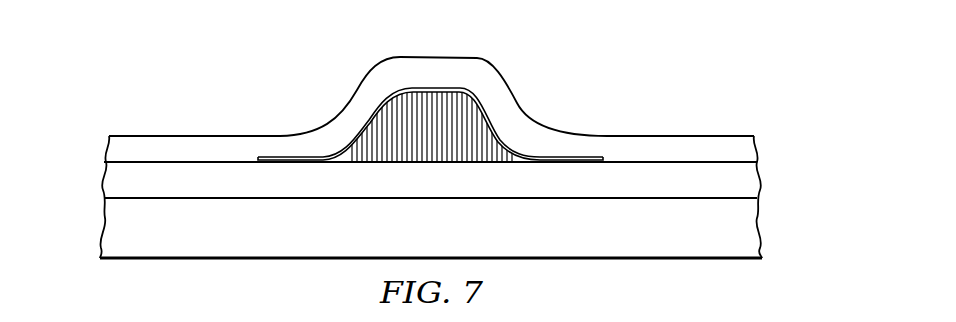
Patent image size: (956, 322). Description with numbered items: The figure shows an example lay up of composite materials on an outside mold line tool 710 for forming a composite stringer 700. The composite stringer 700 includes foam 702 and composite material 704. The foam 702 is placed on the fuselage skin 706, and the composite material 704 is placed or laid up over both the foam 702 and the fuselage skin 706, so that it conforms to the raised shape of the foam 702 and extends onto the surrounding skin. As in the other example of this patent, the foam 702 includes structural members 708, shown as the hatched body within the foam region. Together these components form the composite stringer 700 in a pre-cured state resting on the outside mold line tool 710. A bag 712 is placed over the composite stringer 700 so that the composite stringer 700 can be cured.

The composite stringer 700 is at (577, 157).
The foam 702 is at (400, 108).
The composite material 704 is at (438, 86).
The fuselage skin 706 is at (100, 178).
The structural members 708 is at (422, 142).
The outside mold line tool 710 is at (760, 218).
The bag 712 is at (700, 135).